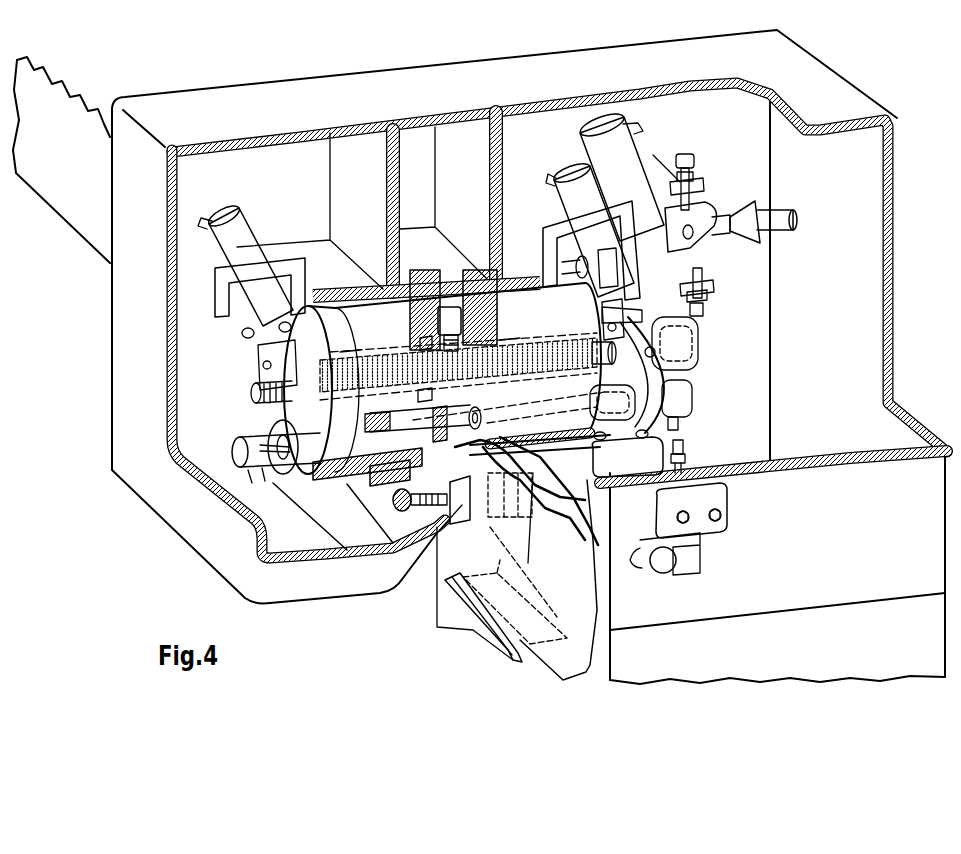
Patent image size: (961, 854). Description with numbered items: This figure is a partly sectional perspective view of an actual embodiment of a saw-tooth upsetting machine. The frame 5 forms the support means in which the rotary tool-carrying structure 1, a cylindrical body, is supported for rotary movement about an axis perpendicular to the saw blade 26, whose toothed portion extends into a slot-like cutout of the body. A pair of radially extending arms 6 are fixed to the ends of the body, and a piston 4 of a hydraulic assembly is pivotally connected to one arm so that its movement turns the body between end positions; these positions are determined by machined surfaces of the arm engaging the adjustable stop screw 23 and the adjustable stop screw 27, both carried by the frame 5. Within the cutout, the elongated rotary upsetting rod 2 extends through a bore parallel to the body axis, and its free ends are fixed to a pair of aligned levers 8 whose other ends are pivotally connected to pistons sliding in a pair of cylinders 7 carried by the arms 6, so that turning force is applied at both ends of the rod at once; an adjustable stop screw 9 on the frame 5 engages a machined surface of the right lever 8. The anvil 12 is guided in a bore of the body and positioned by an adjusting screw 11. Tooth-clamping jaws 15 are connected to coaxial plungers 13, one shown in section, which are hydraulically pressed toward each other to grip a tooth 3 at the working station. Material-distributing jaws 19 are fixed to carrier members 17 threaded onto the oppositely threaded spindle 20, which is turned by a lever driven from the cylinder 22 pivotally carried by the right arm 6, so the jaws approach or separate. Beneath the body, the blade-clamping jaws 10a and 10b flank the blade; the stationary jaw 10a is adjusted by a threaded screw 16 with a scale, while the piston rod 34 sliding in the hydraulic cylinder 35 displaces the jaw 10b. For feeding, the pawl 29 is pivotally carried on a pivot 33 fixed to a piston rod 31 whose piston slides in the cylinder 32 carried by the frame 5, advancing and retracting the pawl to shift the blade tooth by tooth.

The tool-carrying structure 1 is at (357, 317).
The rotary upsetting rod 2 is at (266, 478).
The tooth 3 is at (483, 440).
The piston 4 is at (780, 217).
The frame 5 is at (898, 334).
The radially extending arms 6 is at (705, 207).
The cylinders 7 is at (240, 231).
The levers 8 is at (277, 427).
The adjustable stop screw 9 is at (685, 453).
The blade-clamping jaw 10a is at (460, 505).
The blade-clamping jaw 10b is at (497, 527).
The adjusting screw 11 is at (445, 306).
The anvil 12 is at (423, 338).
The plungers 13 is at (400, 421).
The clamping jaws 15 is at (470, 428).
The threaded screw 16 is at (400, 506).
The carrier members 17 is at (357, 360).
The material-distributing jaws 19 is at (430, 397).
The threaded spindle 20 is at (533, 350).
The cylinder 22 is at (580, 134).
The adjustable stop screw 23 is at (700, 277).
The saw blade 26 is at (580, 580).
The adjustable stop screw 27 is at (684, 156).
The pawl 29 is at (575, 522).
The piston rod 31 is at (578, 528).
The cylinder 32 is at (672, 518).
The pivot 33 is at (530, 563).
The piston rod 34 is at (583, 452).
The hydraulic cylinder 35 is at (670, 436).